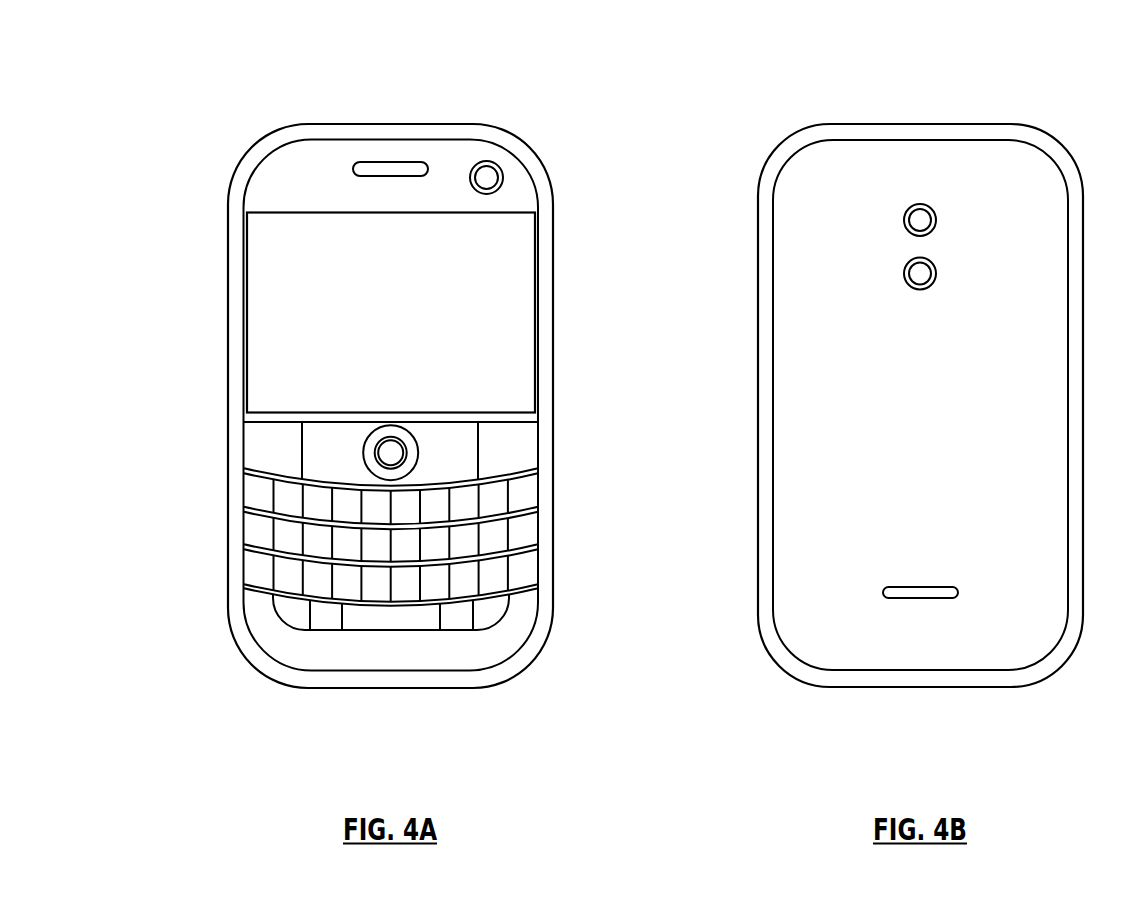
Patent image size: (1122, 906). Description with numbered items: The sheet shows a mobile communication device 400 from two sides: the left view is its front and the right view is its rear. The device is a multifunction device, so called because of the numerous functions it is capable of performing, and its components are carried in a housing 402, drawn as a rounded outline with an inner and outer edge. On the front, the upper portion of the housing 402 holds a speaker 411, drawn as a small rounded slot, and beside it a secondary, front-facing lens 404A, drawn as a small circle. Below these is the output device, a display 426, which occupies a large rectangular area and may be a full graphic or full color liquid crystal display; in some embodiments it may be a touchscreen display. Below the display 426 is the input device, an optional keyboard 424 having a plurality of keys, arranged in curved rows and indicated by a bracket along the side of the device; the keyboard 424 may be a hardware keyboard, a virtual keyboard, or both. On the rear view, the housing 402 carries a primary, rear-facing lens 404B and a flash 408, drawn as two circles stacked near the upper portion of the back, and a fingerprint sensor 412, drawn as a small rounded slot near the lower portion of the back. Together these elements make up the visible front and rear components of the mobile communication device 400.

In FIG. 4A, the mobile communication device 400 is at (196, 113).
In FIG. 4B, the mobile communication device 400 is at (726, 113).
In FIG. 4A, the housing 402 is at (228, 328).
In FIG. 4A, the speaker 411 is at (383, 162).
In FIG. 4A, the secondary (front-facing) lens 404A is at (503, 177).
In FIG. 4A, the display 426 is at (407, 294).
In FIG. 4A, the keyboard 424 is at (565, 460).
In FIG. 4B, the flash 408 is at (937, 218).
In FIG. 4B, the primary (rear-facing) lens 404B is at (937, 272).
In FIG. 4B, the fingerprint sensor 412 is at (913, 586).